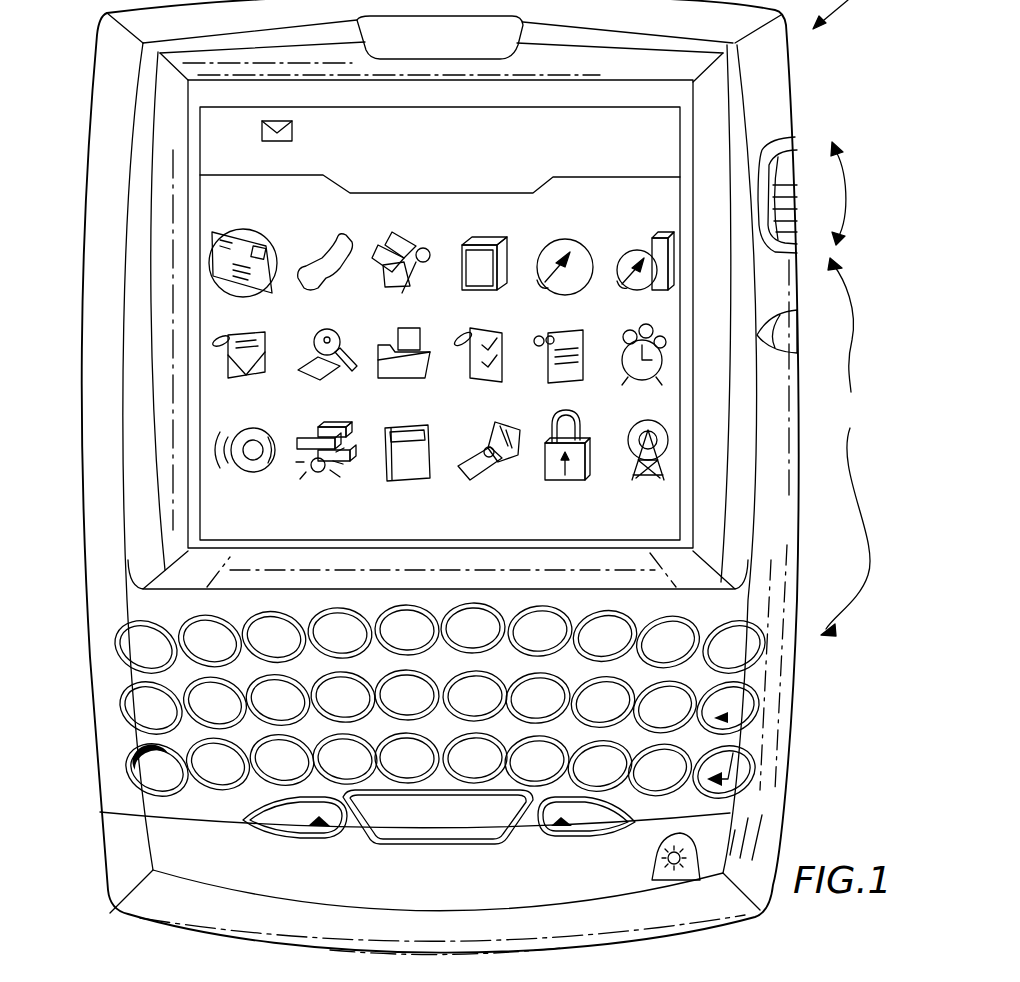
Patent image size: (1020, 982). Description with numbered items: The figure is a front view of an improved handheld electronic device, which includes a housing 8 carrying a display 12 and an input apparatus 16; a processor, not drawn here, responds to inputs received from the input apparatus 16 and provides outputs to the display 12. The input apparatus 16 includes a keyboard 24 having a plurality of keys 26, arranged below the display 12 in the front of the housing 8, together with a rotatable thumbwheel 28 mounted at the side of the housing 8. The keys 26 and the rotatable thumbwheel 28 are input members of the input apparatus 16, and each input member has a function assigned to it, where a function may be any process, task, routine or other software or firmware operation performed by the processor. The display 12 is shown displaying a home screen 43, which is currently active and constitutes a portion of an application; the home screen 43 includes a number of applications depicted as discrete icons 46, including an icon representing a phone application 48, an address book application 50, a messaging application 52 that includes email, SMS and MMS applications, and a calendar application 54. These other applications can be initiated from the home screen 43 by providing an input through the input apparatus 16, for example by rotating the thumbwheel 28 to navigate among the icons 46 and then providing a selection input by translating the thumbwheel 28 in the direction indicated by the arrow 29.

The housing 8 is at (773, 87).
The display 12 is at (643, 140).
The input apparatus 16 is at (420, 232).
The keyboard 24 is at (747, 603).
The keys 26 is at (444, 741).
The rotatable thumbwheel 28 is at (797, 173).
The arrow 29 is at (843, 185).
The home screen 43 is at (218, 202).
The icons 46 is at (441, 340).
The phone application 48 is at (338, 262).
The address book application 50 is at (397, 277).
The messaging application 52 is at (237, 296).
The calendar application 54 is at (505, 285).